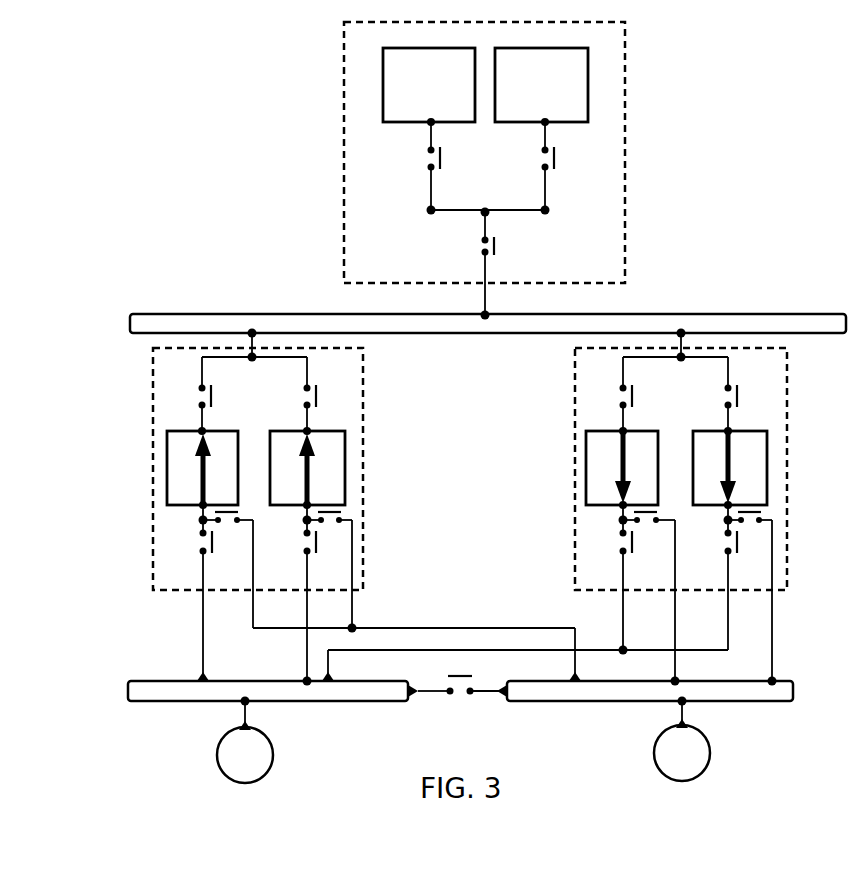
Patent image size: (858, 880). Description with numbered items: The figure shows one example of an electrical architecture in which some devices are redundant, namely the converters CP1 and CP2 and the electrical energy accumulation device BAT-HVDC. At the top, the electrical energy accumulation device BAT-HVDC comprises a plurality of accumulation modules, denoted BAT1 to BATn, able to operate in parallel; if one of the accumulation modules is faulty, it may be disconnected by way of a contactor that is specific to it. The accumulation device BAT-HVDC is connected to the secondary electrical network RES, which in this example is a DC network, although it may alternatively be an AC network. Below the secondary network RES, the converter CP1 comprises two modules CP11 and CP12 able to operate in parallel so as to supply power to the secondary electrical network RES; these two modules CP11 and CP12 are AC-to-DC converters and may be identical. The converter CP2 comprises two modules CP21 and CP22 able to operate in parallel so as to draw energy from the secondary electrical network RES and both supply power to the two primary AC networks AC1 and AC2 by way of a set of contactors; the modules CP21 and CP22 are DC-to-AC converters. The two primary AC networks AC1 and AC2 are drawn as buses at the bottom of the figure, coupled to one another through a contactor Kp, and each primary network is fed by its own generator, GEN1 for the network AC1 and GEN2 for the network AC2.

The electrical energy accumulation device BAT-HVDC is at (484, 171).
The accumulation module BAT1 is at (429, 85).
The accumulation module BATn is at (541, 85).
The secondary electrical network RES is at (488, 323).
The converter CP1 is at (367, 507).
The converter CP2 is at (554, 507).
The module CP11 is at (202, 468).
The module CP12 is at (307, 468).
The module CP21 is at (622, 468).
The module CP22 is at (730, 468).
The primary AC network AC1 is at (268, 691).
The primary AC network AC2 is at (650, 691).
The bus coupling switch Kp is at (457, 699).
The first generator GEN1 is at (245, 740).
The second generator GEN2 is at (682, 739).